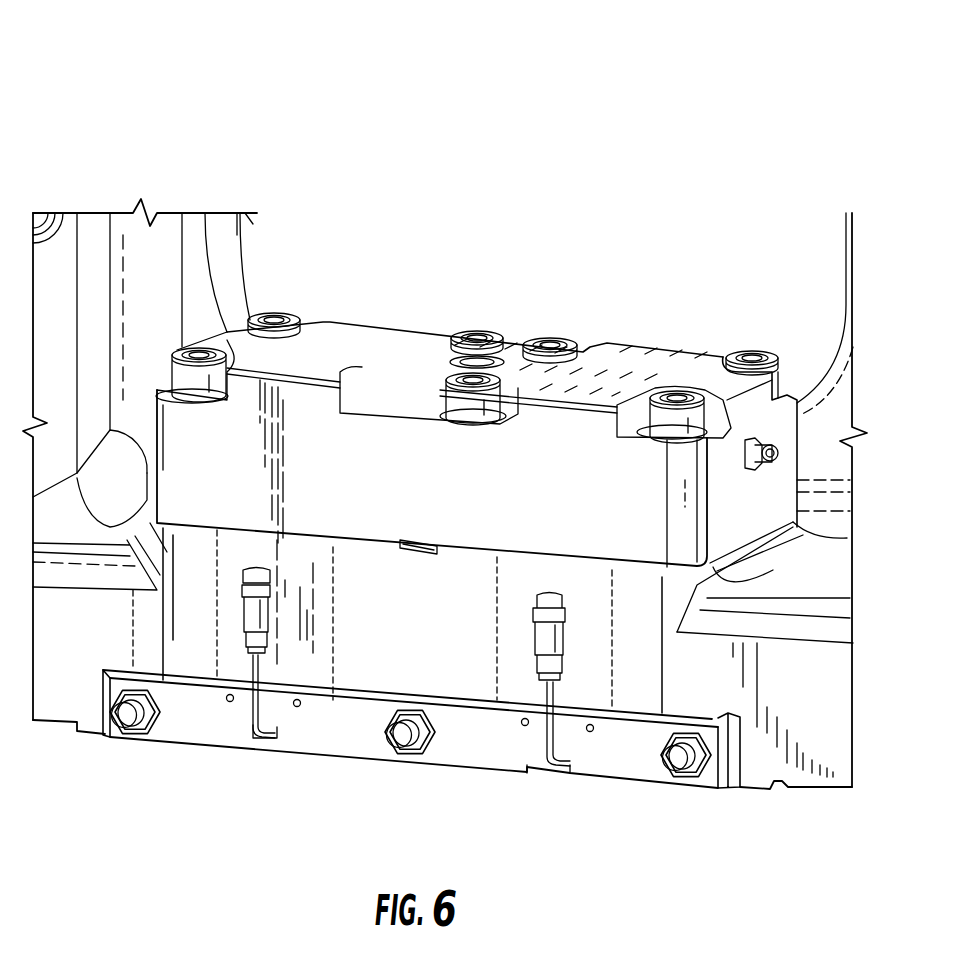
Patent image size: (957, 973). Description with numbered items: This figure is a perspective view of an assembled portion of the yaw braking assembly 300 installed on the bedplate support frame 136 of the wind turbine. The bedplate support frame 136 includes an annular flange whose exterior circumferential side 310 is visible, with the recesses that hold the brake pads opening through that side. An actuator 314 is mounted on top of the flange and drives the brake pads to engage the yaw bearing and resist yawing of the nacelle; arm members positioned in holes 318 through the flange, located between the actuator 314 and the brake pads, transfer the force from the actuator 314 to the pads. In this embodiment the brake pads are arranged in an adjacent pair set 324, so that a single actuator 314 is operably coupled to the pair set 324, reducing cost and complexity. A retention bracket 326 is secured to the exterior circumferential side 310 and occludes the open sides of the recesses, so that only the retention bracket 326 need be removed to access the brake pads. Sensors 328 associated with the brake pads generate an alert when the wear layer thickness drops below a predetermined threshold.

The yaw braking assembly 300 is at (780, 72).
The bedplate support frame 136 is at (107, 186).
The exterior circumferential side 310 is at (830, 717).
The actuator 314 is at (372, 343).
The hole 318 is at (495, 665).
The pair set 324 is at (233, 787).
The retention bracket 326 is at (628, 763).
The sensor 328 is at (257, 568).